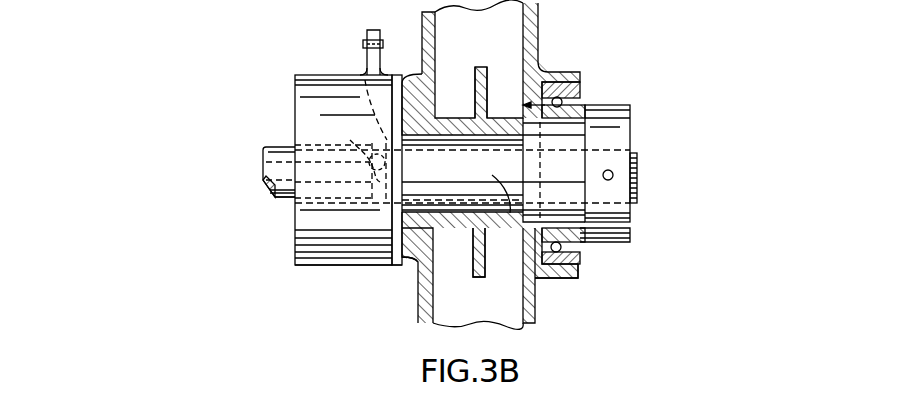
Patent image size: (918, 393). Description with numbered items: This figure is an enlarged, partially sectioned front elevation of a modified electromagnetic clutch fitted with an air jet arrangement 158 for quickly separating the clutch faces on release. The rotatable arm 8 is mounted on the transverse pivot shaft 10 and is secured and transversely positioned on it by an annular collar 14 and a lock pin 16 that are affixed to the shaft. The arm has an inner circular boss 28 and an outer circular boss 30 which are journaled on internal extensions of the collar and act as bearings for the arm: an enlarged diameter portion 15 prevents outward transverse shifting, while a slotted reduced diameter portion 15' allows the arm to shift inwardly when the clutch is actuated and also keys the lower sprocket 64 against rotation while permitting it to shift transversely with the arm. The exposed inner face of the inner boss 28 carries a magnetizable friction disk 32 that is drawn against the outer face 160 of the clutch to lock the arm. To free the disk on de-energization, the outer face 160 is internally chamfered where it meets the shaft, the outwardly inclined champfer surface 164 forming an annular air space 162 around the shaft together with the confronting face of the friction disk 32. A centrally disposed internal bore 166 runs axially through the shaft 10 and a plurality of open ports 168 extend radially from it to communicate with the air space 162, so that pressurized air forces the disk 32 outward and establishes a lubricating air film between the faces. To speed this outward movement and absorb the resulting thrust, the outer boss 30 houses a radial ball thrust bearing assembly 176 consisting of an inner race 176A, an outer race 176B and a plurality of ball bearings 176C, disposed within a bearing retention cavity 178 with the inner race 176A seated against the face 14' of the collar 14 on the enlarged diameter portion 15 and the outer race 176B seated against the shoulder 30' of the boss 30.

The rotatable arm 8 is at (544, 43).
The transverse pivot shaft 10 is at (283, 200).
The annular collar 14 is at (636, 161).
The face of the collar 14' is at (641, 226).
The enlarged diameter portion of the internal extension 15 is at (630, 183).
The slotted reduced diameter portion 15' is at (496, 173).
The lock pin 16 is at (613, 175).
The inner circular boss 28 is at (411, 262).
The outer circular boss 30 is at (579, 60).
The shoulder of the boss 30' is at (600, 141).
The magnetizable friction disk 32 is at (397, 266).
The lower sprocket 64 is at (472, 262).
The air jet arrangement 158 is at (426, 160).
The outer face of the clutch 160 is at (396, 80).
The annular air space 162 is at (365, 80).
The champfer surface 164 is at (368, 263).
The internal bore 166 is at (268, 182).
The open ports 168 is at (362, 141).
The radial ball thrust bearing assembly 176 is at (582, 90).
The inner race 176A is at (582, 250).
The outer race 176B is at (580, 256).
The ball bearings 176C is at (553, 264).
The bearing retention cavity 178 is at (587, 115).